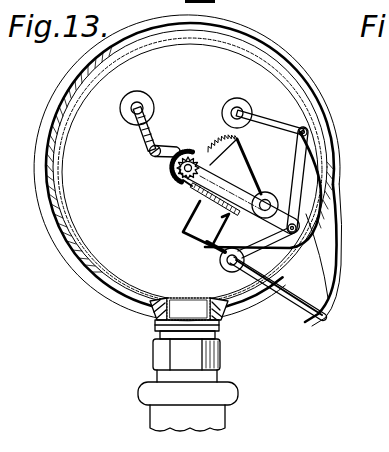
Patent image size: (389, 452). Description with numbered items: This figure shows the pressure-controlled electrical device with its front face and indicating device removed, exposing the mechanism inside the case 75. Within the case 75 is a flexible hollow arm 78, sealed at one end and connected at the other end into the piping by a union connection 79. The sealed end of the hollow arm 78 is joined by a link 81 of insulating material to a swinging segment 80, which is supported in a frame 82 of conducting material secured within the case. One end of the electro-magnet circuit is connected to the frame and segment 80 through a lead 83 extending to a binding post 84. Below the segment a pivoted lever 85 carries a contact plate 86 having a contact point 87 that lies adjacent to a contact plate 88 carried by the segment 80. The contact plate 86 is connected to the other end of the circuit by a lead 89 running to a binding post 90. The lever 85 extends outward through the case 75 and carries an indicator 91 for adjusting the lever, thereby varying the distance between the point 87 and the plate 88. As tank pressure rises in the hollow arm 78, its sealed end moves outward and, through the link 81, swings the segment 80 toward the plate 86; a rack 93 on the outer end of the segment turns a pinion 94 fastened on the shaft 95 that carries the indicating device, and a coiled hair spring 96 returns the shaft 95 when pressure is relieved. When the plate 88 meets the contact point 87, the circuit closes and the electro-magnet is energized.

The case 75 is at (324, 110).
The flexible hollow arm 78 is at (120, 282).
The union connection 79 is at (216, 357).
The swinging segment 80 is at (251, 180).
The link 81 is at (292, 186).
The frame 82 is at (157, 158).
The lead 83 is at (150, 128).
The binding post 84 is at (143, 93).
The pivoted lever 85 is at (236, 272).
The contact plate 86 is at (206, 223).
The contact point 87 is at (260, 213).
The contact plate 88 is at (203, 190).
The lead 89 is at (318, 202).
The binding post 90 is at (234, 98).
The indicator 91 is at (324, 322).
The rack 93 is at (208, 144).
The pinion 94 is at (193, 156).
The shaft 95 is at (185, 189).
The coiled hair spring 96 is at (150, 154).